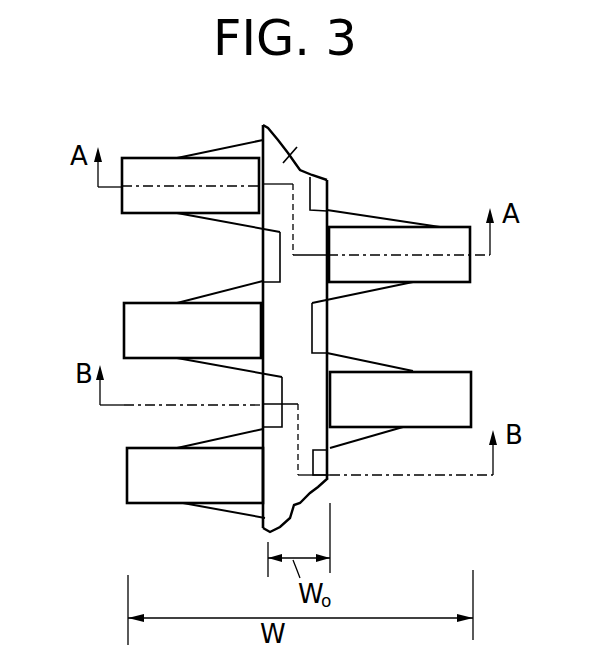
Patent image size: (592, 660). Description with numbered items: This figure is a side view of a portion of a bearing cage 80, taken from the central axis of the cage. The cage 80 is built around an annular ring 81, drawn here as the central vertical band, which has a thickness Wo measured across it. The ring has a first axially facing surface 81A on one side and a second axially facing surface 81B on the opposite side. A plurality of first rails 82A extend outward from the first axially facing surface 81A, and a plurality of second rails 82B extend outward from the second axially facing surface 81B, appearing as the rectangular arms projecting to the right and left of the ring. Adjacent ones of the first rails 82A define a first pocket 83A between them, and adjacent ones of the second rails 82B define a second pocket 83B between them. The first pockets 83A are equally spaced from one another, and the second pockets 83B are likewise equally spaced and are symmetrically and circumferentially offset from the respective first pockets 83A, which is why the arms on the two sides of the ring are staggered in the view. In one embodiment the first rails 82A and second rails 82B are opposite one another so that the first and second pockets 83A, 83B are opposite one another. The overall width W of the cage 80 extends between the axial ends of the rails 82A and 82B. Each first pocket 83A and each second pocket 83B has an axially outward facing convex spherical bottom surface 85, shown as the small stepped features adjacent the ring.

The cage 80 is at (452, 152).
The annular ring 81 is at (290, 157).
The first axially facing surface 81A is at (328, 180).
The second axially facing surface 81B is at (262, 132).
The first rails 82A is at (450, 267).
The second rails 82B is at (133, 198).
The first pocket 83A is at (450, 324).
The second pocket 83B is at (125, 256).
The convex spherical bottom surface 85 is at (262, 262).